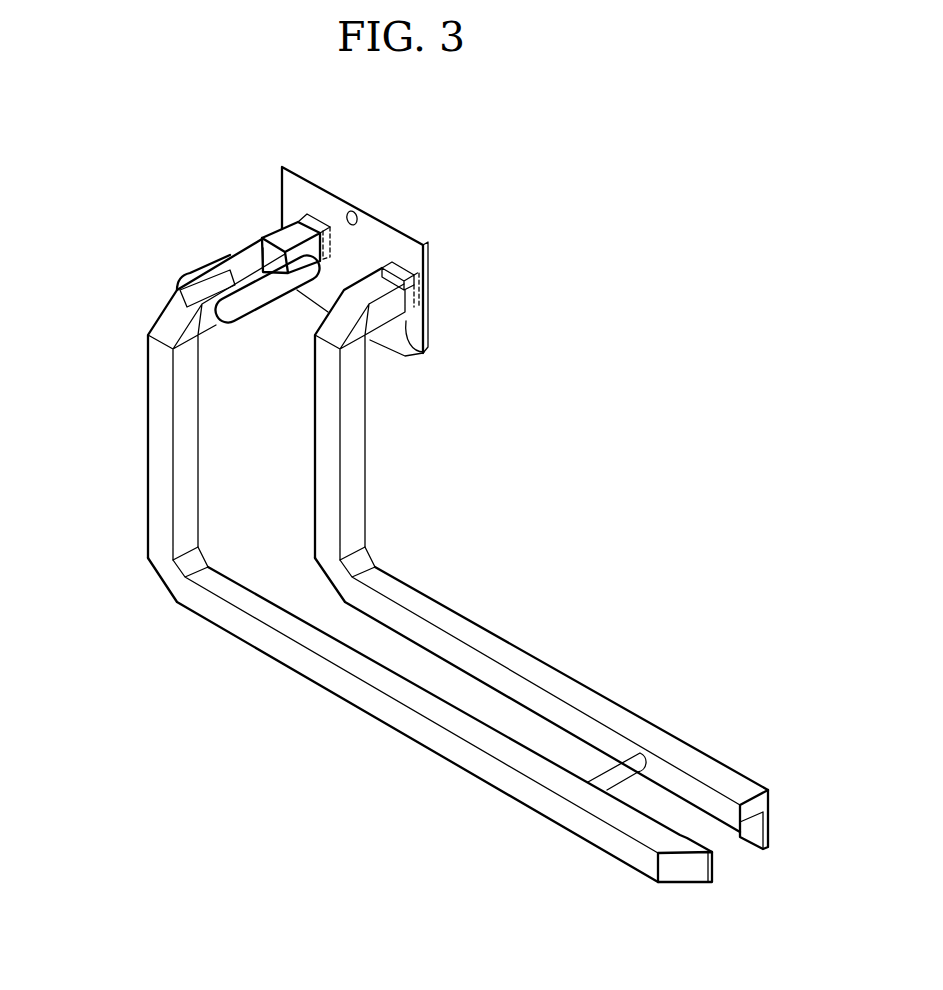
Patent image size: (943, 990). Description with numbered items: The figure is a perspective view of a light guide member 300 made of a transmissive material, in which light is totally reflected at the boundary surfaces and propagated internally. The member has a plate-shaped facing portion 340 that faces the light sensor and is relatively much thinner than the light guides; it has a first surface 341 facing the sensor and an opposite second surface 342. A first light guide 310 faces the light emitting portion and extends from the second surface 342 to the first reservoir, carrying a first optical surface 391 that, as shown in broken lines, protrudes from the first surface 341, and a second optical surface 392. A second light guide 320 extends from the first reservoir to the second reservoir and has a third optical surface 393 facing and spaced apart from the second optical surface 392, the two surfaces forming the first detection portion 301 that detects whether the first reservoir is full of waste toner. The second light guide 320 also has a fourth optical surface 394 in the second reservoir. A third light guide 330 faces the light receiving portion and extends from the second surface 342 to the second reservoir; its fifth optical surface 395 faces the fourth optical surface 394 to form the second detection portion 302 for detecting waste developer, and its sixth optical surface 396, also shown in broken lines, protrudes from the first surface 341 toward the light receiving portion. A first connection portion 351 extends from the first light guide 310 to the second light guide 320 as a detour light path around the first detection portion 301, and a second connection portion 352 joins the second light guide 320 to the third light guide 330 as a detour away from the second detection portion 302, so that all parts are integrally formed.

The light guide member 300 is at (682, 280).
The first detection portion 301 is at (210, 176).
The second detection portion 302 is at (820, 930).
The first light guide 310 is at (288, 231).
The second light guide 320 is at (138, 453).
The third light guide 330 is at (540, 634).
The facing portion 340 is at (410, 224).
The first surface 341 is at (432, 318).
The second surface 342 is at (410, 326).
The first connection portion 351 is at (268, 298).
The second connection portion 352 is at (634, 768).
The first optical surface 391 is at (321, 223).
The second optical surface 392 is at (261, 246).
The third optical surface 393 is at (232, 262).
The fourth optical surface 394 is at (714, 858).
The fifth optical surface 395 is at (752, 833).
The sixth optical surface 396 is at (424, 262).